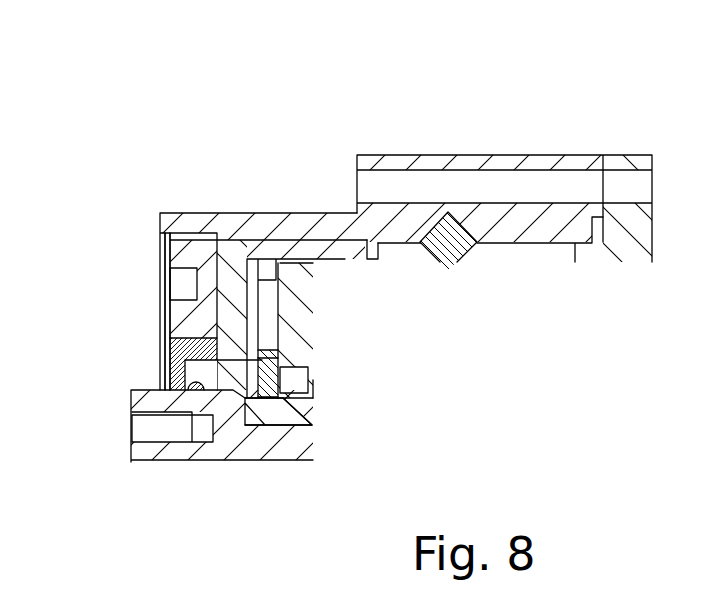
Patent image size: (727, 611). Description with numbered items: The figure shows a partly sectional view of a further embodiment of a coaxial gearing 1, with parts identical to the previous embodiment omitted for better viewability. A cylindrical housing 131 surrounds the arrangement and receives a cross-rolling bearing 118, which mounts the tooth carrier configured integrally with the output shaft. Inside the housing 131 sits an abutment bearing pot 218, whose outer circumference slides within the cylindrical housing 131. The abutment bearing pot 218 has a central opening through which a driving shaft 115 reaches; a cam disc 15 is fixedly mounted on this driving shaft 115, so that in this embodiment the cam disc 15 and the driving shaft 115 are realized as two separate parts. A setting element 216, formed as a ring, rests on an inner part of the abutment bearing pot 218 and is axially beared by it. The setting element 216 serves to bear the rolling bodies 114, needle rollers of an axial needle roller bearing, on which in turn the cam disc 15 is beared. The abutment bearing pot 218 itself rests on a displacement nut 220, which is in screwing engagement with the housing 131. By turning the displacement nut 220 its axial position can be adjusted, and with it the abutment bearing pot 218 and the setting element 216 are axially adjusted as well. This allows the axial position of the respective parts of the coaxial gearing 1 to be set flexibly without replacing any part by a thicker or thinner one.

The coaxial gearing 1 is at (165, 101).
The cam disc 15 is at (283, 427).
The rolling bodies 114 is at (257, 307).
The driving shaft 115 is at (228, 462).
The cross-rolling bearing 118 is at (430, 224).
The housing 131 is at (367, 155).
The setting element 216 is at (258, 258).
The abutment bearing pot 218 is at (305, 240).
The displacement nut 220 is at (168, 248).